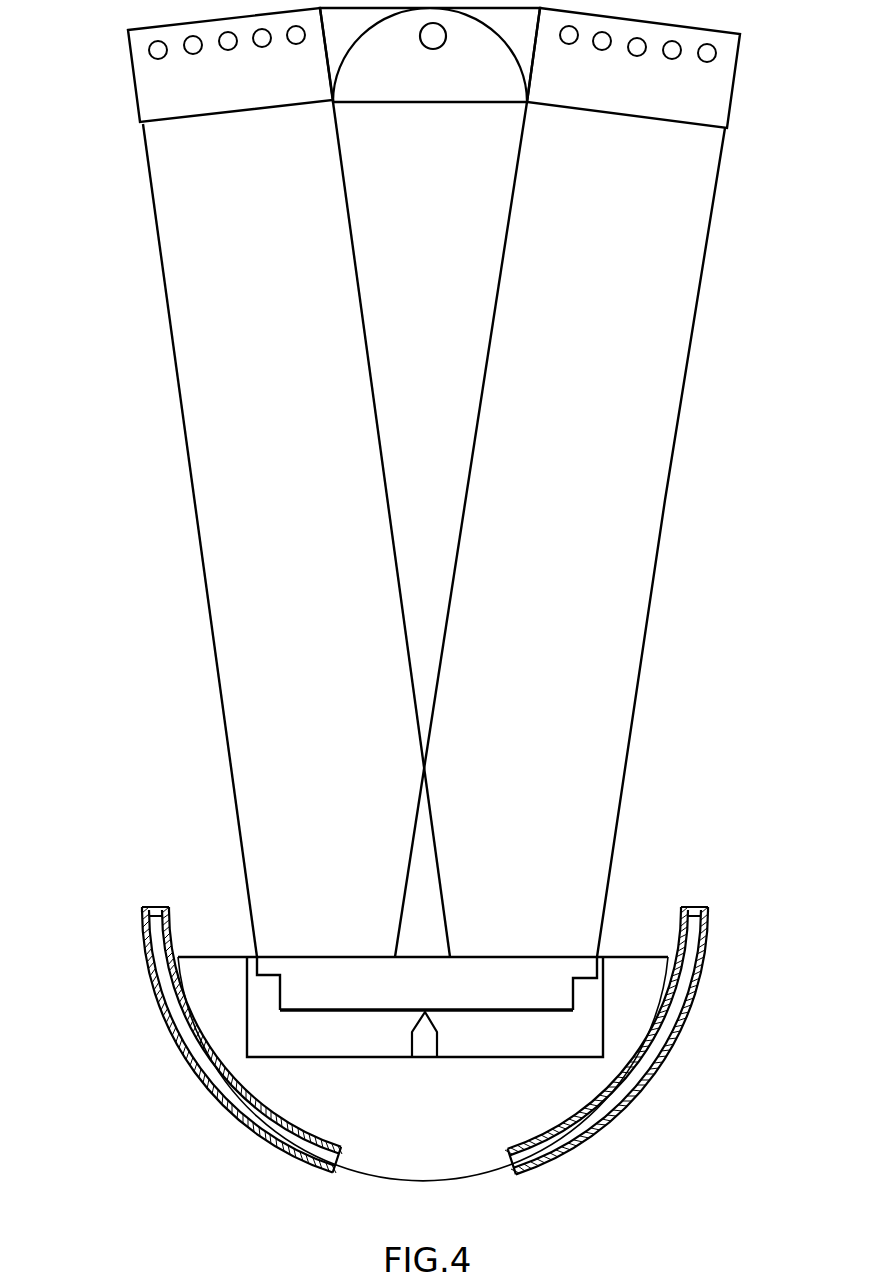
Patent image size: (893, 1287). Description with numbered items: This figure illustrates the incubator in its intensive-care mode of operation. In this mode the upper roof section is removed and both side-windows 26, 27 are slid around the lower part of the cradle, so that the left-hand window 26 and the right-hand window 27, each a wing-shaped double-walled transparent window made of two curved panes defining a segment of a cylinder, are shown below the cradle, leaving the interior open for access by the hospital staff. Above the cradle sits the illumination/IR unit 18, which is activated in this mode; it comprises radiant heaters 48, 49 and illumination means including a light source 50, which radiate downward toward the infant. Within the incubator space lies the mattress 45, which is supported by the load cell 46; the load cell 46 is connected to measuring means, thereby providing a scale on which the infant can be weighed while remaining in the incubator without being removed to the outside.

The illumination/IR unit 18 is at (713, 92).
The radiant heater 48 is at (150, 52).
The radiant heater 49 is at (632, 56).
The light source 50 is at (426, 42).
The mattress 45 is at (343, 967).
The load cell 46 is at (430, 1044).
The left-hand window 26 is at (165, 975).
The right-hand window 27 is at (685, 985).